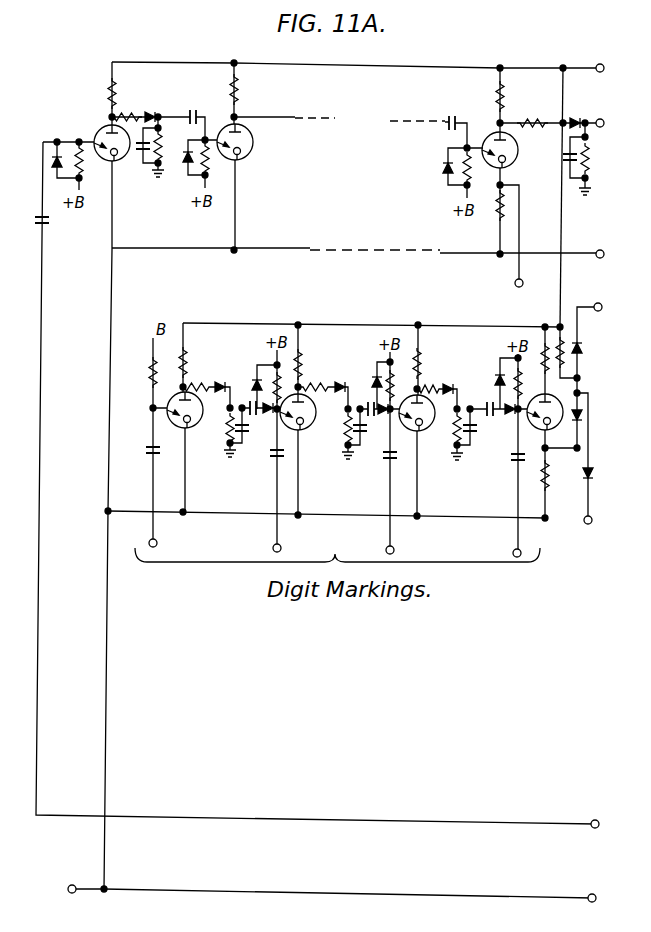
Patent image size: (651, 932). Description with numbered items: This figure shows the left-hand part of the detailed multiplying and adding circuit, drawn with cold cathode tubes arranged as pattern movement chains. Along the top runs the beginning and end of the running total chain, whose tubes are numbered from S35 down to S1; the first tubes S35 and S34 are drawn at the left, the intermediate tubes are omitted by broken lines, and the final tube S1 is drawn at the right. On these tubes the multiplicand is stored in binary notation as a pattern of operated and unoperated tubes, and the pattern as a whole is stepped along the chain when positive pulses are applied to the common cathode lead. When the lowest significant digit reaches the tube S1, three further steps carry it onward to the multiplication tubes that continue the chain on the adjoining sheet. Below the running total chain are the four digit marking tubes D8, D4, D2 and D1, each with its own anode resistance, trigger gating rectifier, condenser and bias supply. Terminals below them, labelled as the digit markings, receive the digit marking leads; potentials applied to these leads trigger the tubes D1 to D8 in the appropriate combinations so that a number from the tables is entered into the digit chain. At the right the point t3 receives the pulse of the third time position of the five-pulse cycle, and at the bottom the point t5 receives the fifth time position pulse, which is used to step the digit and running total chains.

The running total chain tube S35 is at (121, 151).
The running total chain tube S34 is at (244, 150).
The running total chain tube S1 is at (507, 157).
The digit marking tube D8 is at (185, 419).
The digit marking tube D4 is at (298, 419).
The digit marking tube D2 is at (417, 423).
The digit marking tube D1 is at (545, 420).
The time position pulse point t3 is at (577, 462).
The time position pulse point t5 is at (332, 881).